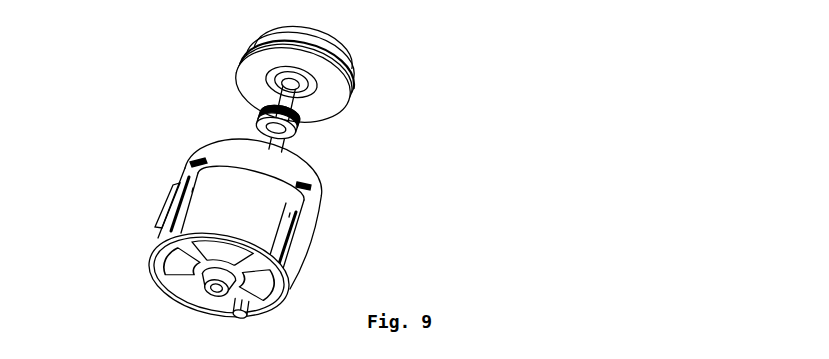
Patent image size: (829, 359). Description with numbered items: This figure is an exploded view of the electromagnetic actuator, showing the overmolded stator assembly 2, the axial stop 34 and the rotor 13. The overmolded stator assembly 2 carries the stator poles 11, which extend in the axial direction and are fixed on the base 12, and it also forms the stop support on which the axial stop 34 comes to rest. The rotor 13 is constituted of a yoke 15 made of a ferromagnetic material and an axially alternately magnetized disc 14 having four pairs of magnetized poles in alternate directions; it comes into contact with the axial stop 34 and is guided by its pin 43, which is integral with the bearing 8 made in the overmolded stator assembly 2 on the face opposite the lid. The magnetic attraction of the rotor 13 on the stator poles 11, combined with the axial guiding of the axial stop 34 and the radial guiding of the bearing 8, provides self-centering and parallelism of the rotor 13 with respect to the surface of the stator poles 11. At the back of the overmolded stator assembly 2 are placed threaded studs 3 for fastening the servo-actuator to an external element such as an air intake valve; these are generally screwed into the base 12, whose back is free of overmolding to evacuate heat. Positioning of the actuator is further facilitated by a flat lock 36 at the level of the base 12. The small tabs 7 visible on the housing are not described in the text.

The overmolded stator assembly 2 is at (318, 250).
The stud 3 is at (233, 318).
The locking tabs 7 is at (207, 163).
The bearing 8 is at (233, 288).
The stator poles 11 is at (175, 262).
The base 12 is at (167, 287).
The rotor 13 is at (371, 91).
The axially alternately magnetized disc 14 is at (250, 78).
The yoke 15 is at (343, 55).
The axial stop 34 is at (299, 133).
The flat lock 36 is at (172, 237).
The pin 43 is at (265, 137).